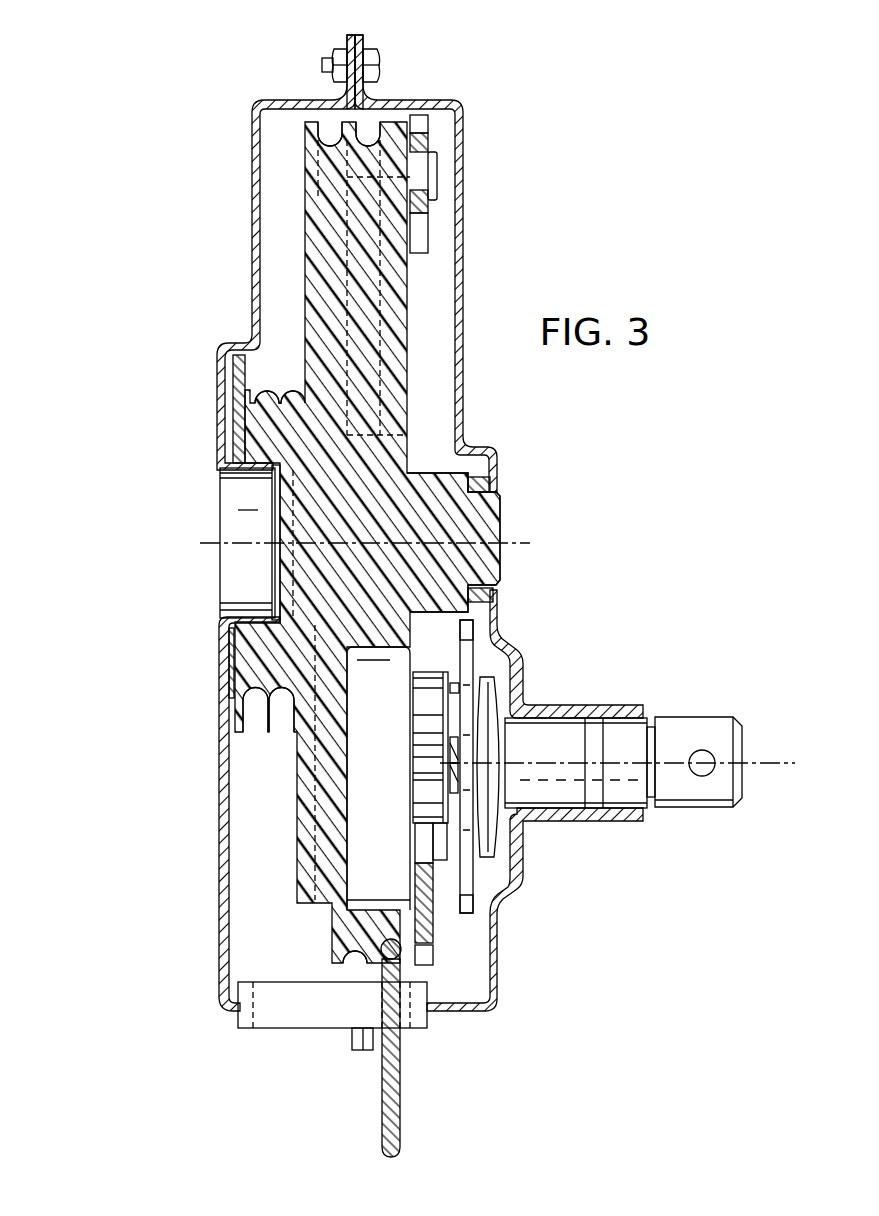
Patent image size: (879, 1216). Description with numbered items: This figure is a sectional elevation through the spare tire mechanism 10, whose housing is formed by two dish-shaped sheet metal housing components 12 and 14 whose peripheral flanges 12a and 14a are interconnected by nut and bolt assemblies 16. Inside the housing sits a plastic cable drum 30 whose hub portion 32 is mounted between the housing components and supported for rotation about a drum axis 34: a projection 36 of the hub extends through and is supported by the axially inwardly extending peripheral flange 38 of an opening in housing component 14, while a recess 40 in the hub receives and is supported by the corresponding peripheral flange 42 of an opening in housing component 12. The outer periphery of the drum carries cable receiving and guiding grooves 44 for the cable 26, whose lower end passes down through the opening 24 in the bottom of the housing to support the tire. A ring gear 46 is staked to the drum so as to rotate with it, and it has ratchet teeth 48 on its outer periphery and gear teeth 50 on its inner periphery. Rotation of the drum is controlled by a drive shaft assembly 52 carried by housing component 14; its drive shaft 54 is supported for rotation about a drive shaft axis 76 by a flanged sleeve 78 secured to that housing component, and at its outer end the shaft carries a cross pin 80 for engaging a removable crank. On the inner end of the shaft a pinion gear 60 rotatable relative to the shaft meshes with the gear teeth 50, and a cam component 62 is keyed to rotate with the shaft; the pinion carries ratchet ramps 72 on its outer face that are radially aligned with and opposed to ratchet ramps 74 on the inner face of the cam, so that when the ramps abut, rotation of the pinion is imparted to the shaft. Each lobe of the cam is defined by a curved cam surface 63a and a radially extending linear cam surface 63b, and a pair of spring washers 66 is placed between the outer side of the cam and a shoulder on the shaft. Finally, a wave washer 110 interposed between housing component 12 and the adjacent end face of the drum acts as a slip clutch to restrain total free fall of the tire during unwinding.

The spare tire mechanism 10 is at (241, 95).
The housing component 12 is at (268, 237).
The peripheral flange 12a is at (346, 43).
The housing component 14 is at (436, 248).
The peripheral flange 14a is at (360, 37).
The nut and bolt assembly 16 is at (374, 57).
The opening 24 is at (252, 1035).
The cable 26 is at (400, 1088).
The cable drum 30 is at (300, 245).
The hub portion 32 is at (465, 525).
The drum axis 34 is at (513, 545).
The projection 36 is at (490, 597).
The peripheral flange 38 is at (478, 487).
The recess 40 is at (243, 475).
The peripheral flange 42 is at (245, 608).
The cable receiving and guiding grooves 44 is at (328, 128).
The ring gear 46 is at (432, 140).
The ratchet teeth 48 is at (422, 122).
The gear teeth 50 is at (423, 247).
The drive shaft assembly 52 is at (500, 663).
The drive shaft 54 is at (698, 755).
The pinion gear 60 is at (418, 745).
The cam component 62 is at (494, 783).
The curved cam surface 63a is at (467, 630).
The linear cam surface 63b is at (466, 916).
The spring washers 66 is at (495, 833).
The ratchet ramps 72 is at (450, 773).
The ratchet ramps 74 is at (450, 783).
The drive shaft axis 76 is at (775, 763).
The flanged sleeve 78 is at (590, 713).
The cross pin 80 is at (705, 777).
The wave washer 110 is at (228, 666).